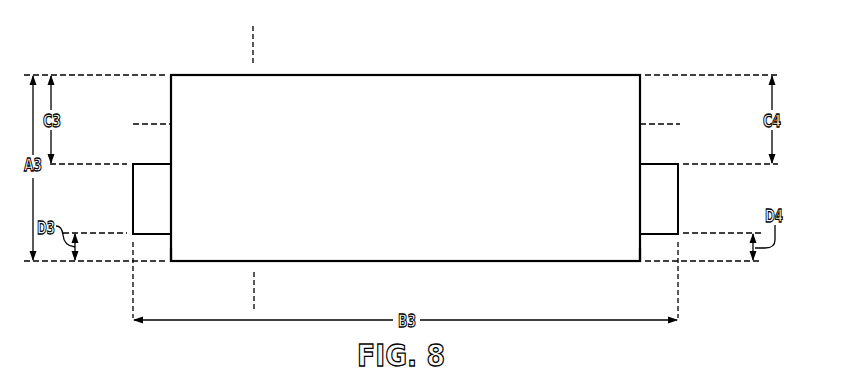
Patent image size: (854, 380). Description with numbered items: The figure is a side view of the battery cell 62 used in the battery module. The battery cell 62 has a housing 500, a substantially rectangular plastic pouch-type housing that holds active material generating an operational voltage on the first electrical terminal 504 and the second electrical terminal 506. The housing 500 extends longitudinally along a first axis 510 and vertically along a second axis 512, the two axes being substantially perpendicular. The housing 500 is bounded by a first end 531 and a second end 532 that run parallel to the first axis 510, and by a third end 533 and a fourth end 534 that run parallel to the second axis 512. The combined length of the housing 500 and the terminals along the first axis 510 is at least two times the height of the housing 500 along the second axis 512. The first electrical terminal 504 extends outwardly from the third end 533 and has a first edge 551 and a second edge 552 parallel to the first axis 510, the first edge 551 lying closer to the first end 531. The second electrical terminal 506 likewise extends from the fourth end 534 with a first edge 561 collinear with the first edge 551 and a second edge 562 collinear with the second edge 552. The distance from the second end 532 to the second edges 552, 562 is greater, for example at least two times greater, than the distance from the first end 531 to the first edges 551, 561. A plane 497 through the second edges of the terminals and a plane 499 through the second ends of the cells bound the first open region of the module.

The battery cell 62 is at (588, 50).
The plane 497 is at (113, 165).
The plane 499 is at (102, 75).
The housing 500 is at (387, 100).
The first electrical terminal 504 is at (147, 213).
The second electrical terminal 506 is at (680, 196).
The first axis 510 is at (153, 124).
The second axis 512 is at (255, 46).
The first end 531 is at (387, 262).
The second end 532 is at (436, 75).
The third end 533 is at (171, 261).
The fourth end 534 is at (640, 261).
The first edge 551 is at (148, 234).
The second edge 552 is at (153, 164).
The first edge 561 is at (668, 234).
The second edge 562 is at (660, 164).